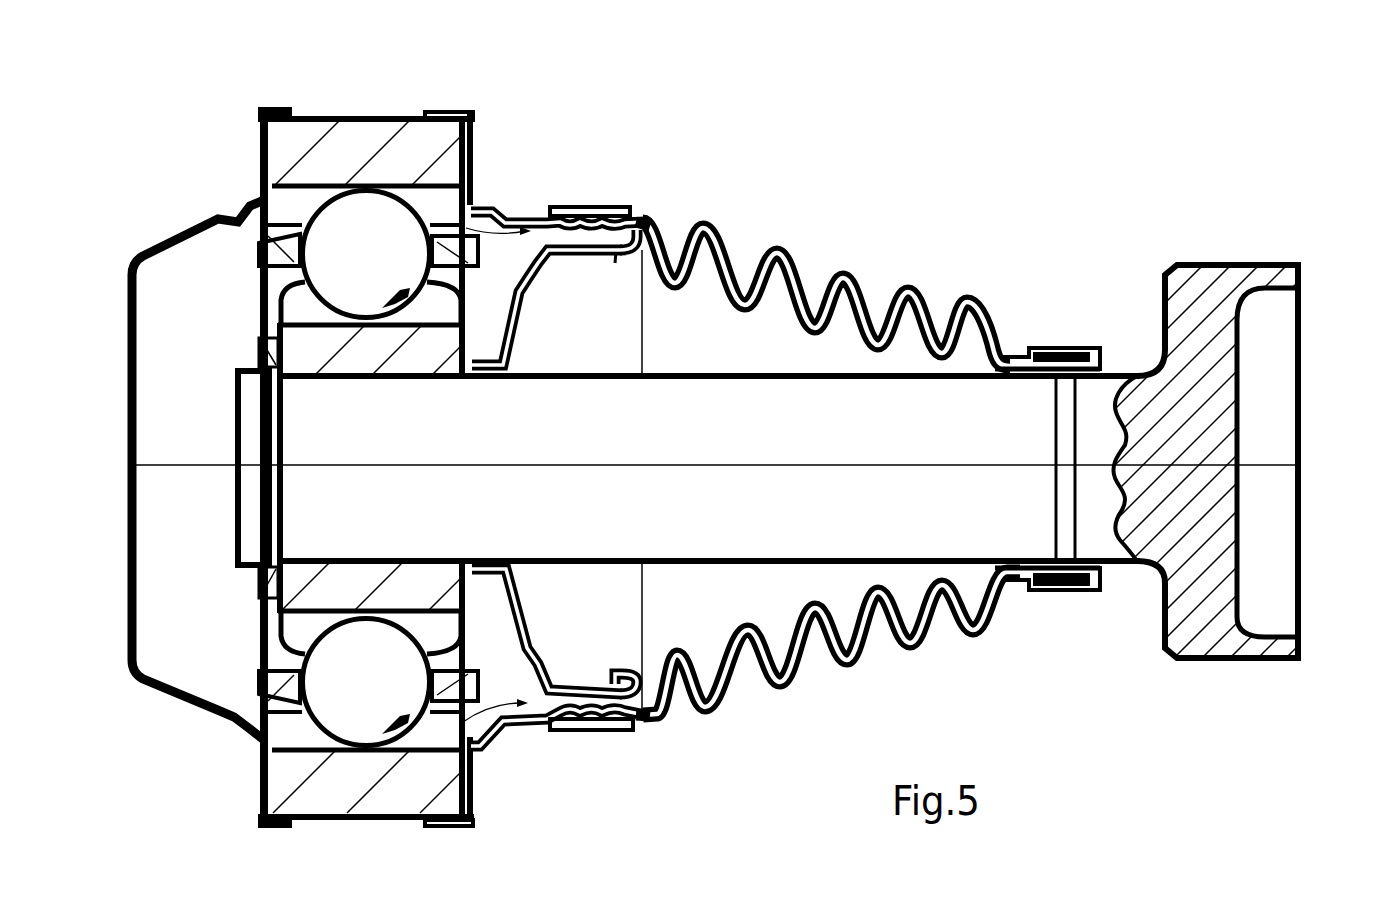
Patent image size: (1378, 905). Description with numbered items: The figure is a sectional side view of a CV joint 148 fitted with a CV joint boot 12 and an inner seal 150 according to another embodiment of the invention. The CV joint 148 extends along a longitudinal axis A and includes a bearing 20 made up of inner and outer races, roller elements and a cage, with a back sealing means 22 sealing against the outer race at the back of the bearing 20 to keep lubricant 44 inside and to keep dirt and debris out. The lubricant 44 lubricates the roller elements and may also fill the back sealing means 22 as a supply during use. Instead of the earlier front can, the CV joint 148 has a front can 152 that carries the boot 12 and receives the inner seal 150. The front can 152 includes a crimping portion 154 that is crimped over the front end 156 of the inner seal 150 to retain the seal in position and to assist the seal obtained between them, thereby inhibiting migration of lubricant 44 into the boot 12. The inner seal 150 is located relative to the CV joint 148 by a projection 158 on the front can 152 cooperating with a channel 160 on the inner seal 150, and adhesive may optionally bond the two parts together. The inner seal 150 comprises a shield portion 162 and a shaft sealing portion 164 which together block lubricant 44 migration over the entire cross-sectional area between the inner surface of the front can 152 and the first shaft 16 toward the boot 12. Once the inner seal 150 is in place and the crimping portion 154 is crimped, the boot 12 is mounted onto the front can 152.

The CV joint boot 12 is at (857, 272).
The first shaft 16 is at (990, 603).
The bearing 20 is at (379, 417).
The back sealing means 22 is at (186, 230).
The lubricant 44 is at (463, 213).
The CV joint 148 is at (785, 385).
The inner seal 150 is at (554, 462).
The front can 152 is at (452, 108).
The crimping portion 154 is at (617, 262).
The front end 156 is at (650, 215).
The projection 158 is at (595, 240).
The channel 160 is at (590, 203).
The shield portion 162 is at (510, 608).
The shaft sealing portion 164 is at (490, 560).
The longitudinal axis A is at (1262, 465).